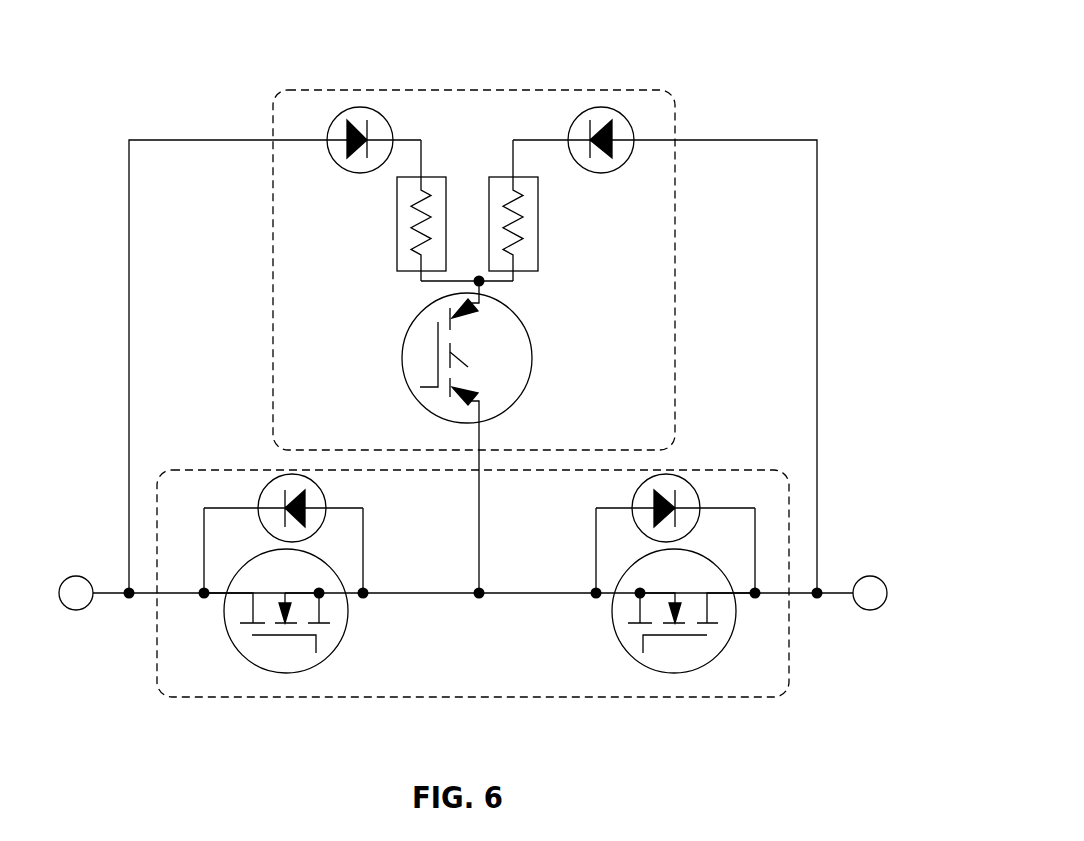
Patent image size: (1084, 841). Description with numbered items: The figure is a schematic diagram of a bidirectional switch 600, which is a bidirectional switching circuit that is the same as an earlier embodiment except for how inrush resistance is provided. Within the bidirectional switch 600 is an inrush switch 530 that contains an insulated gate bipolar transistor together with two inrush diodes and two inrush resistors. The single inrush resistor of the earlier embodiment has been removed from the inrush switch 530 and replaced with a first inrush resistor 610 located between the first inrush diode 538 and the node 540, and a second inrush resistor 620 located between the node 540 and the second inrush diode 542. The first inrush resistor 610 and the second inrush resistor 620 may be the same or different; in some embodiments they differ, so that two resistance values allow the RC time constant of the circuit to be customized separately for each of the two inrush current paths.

The bidirectional switch 600 is at (842, 115).
The inrush switch 530 is at (675, 91).
The first inrush diode 538 is at (350, 107).
The node 540 is at (479, 281).
The second inrush diode 542 is at (600, 107).
The first inrush resistor 610 is at (397, 223).
The second inrush resistor 620 is at (538, 229).